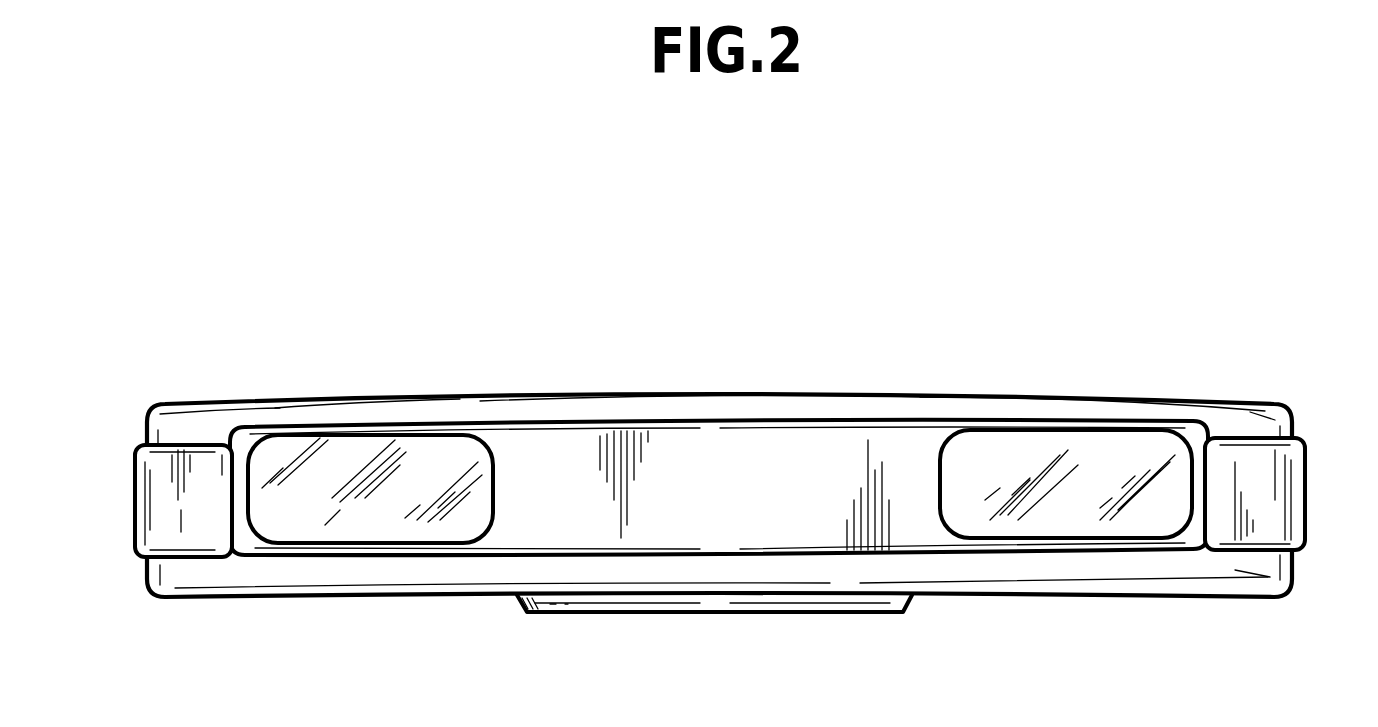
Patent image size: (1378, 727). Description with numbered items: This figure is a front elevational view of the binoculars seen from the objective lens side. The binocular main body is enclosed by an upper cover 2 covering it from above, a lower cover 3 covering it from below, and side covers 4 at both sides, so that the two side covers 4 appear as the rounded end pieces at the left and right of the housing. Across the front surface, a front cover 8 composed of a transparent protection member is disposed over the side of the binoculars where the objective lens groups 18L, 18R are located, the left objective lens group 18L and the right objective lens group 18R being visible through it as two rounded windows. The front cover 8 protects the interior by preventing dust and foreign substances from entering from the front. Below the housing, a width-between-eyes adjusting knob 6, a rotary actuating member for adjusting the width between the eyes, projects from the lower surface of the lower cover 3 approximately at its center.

The upper cover 2 is at (1160, 407).
The lower cover 3 is at (1233, 573).
The side covers 4 is at (158, 515).
The width-between-eyes adjusting knob 6 is at (730, 600).
The front cover 8 is at (728, 445).
The objective lens group 18R is at (413, 458).
The objective lens group 18L is at (1000, 450).